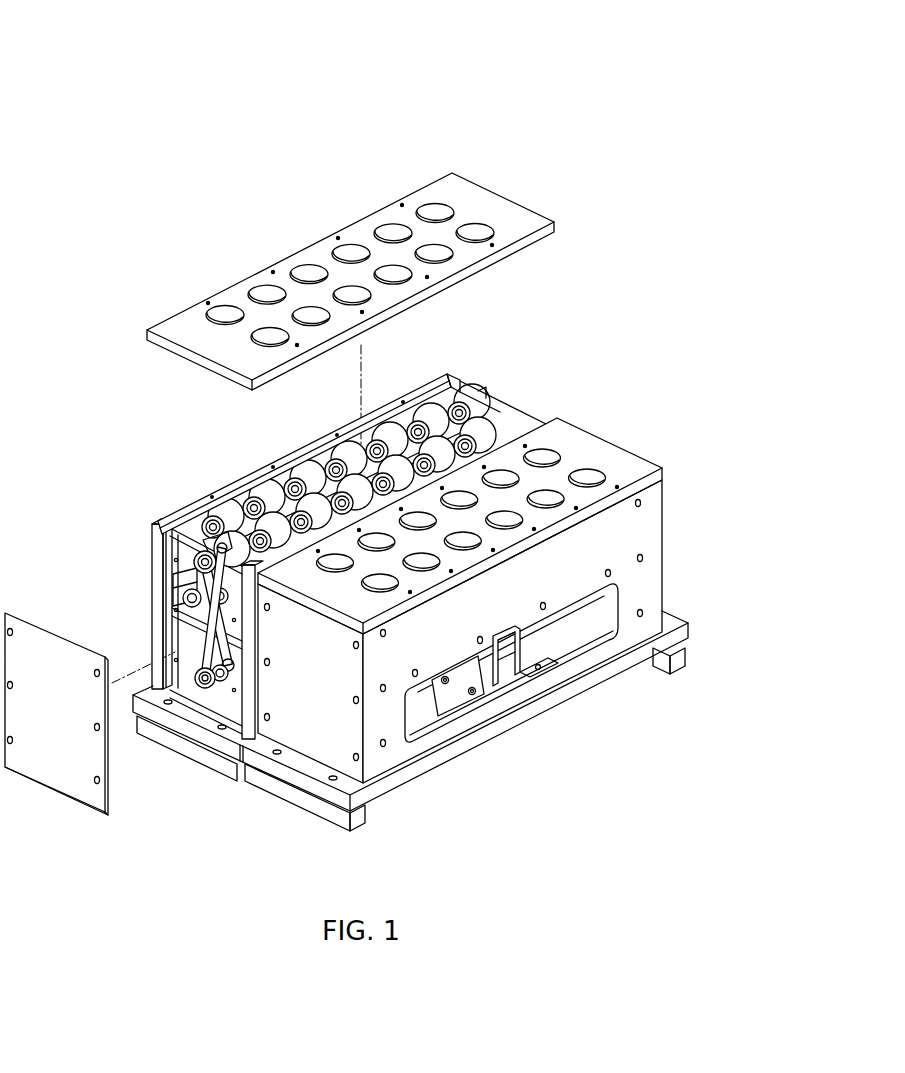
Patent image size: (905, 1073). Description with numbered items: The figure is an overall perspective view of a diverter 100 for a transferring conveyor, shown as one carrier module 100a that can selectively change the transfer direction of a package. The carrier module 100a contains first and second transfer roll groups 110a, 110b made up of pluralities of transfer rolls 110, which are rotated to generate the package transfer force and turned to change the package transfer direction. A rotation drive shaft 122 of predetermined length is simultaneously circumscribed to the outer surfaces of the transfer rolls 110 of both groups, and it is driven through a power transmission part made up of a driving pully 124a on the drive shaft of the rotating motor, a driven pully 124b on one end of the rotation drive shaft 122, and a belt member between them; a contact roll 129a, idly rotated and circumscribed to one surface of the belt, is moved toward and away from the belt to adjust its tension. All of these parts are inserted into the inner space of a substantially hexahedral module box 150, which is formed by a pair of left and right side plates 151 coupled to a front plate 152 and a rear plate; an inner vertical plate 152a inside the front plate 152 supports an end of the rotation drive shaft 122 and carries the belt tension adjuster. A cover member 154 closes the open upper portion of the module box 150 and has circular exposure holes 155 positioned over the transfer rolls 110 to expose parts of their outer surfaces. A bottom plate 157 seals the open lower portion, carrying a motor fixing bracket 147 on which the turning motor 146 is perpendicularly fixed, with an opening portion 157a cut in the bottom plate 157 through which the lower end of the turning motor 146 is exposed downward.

The diverter for a transferring conveyor 100 is at (212, 132).
The carrier module 100a is at (549, 348).
The transfer rolls 110 is at (486, 432).
The first transfer roll group 110a is at (267, 490).
The second transfer roll group 110b is at (510, 416).
The rotation drive shaft 122 is at (323, 498).
The driving pully 124a is at (205, 688).
The driven pully 124b is at (197, 556).
The contact roll 129a is at (167, 598).
The turning motor 146 is at (505, 676).
The motor fixing bracket 147 is at (468, 655).
The module box 150 is at (692, 561).
The left and right side plates 151 is at (655, 523).
The front plate 152 is at (50, 760).
The inner vertical plate 152a is at (180, 637).
The cover member 154 is at (186, 326).
The exposure holes 155 is at (228, 314).
The bottom plate 157 is at (638, 657).
The opening portion 157a is at (545, 673).